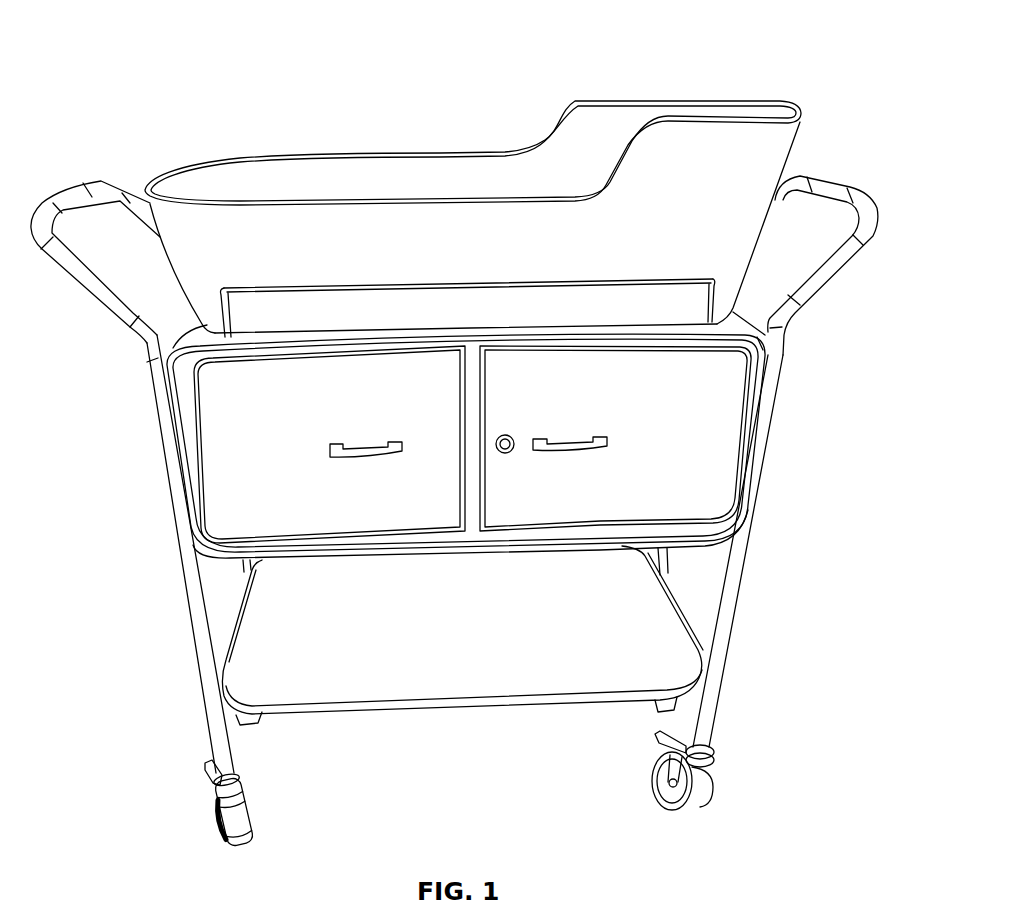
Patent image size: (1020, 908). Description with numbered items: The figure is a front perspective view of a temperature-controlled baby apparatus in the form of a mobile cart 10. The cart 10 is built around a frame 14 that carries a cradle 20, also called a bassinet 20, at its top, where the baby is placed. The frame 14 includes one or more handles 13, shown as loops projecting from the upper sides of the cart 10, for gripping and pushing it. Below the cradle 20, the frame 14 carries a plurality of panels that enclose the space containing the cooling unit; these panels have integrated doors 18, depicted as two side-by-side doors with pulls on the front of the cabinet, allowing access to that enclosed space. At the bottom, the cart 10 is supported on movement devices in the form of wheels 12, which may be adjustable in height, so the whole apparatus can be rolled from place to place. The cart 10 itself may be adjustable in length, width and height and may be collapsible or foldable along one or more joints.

The cart 10 is at (130, 36).
The wheels 12 is at (740, 775).
The handles 13 is at (70, 173).
The frame 14 is at (813, 455).
The doors 18 is at (505, 417).
The cradle 20 is at (614, 84).